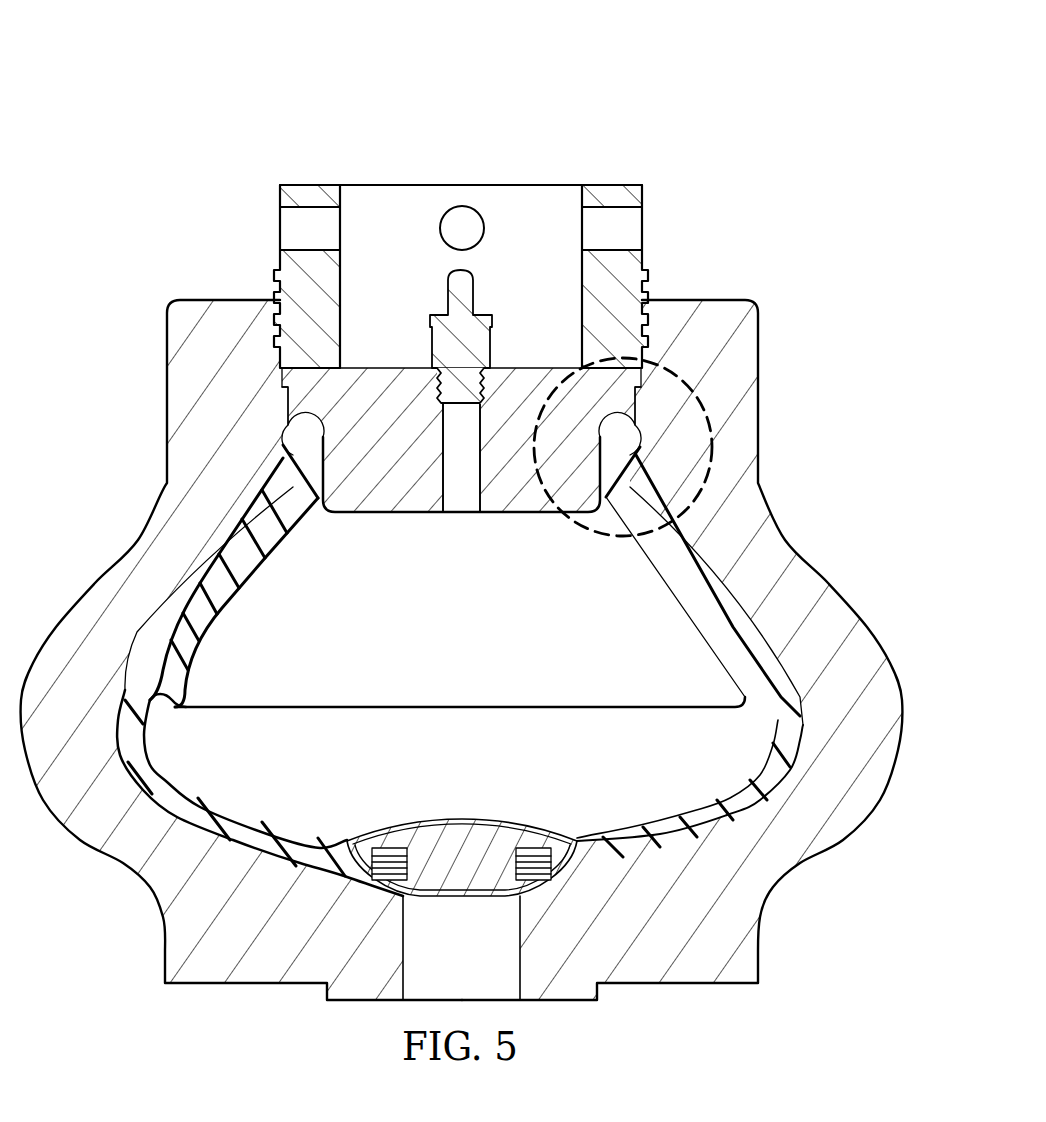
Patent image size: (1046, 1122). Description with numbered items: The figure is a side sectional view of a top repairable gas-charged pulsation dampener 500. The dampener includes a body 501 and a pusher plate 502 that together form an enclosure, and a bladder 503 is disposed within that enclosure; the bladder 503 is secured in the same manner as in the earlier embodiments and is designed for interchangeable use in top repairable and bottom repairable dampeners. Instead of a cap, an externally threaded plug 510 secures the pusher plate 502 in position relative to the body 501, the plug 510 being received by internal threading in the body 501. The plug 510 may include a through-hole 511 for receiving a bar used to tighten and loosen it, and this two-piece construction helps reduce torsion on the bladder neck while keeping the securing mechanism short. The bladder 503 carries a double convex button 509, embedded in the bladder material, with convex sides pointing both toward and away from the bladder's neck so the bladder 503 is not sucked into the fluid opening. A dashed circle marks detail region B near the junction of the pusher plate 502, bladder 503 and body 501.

The top repairable gas-charged pulsation dampener 500 is at (659, 80).
The body 501 is at (812, 580).
The pusher plate 502 is at (392, 380).
The bladder 503 is at (246, 566).
The double convex button 509 is at (440, 835).
The externally threaded plug 510 is at (313, 193).
The through-hole 511 is at (654, 233).
The detail region B is at (602, 538).